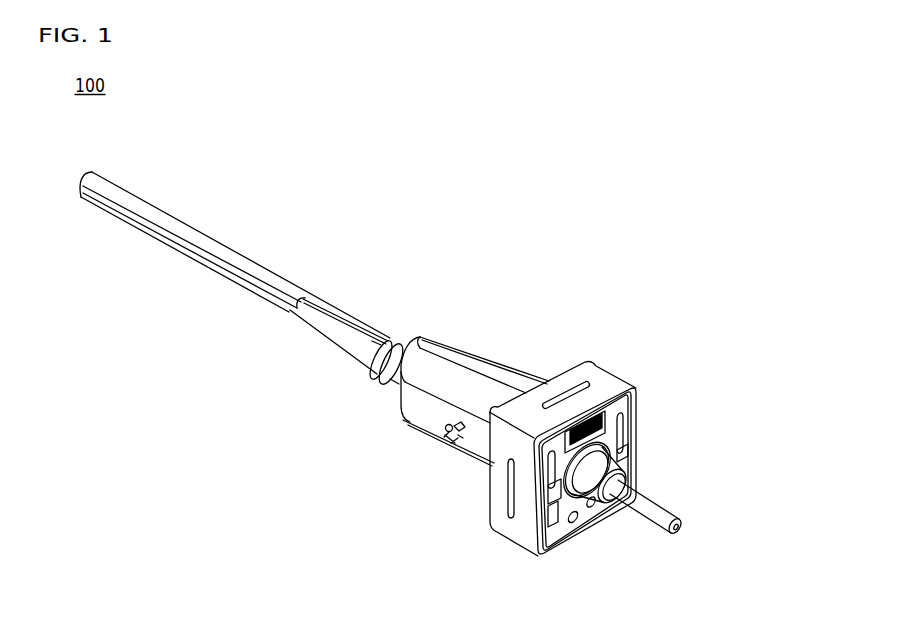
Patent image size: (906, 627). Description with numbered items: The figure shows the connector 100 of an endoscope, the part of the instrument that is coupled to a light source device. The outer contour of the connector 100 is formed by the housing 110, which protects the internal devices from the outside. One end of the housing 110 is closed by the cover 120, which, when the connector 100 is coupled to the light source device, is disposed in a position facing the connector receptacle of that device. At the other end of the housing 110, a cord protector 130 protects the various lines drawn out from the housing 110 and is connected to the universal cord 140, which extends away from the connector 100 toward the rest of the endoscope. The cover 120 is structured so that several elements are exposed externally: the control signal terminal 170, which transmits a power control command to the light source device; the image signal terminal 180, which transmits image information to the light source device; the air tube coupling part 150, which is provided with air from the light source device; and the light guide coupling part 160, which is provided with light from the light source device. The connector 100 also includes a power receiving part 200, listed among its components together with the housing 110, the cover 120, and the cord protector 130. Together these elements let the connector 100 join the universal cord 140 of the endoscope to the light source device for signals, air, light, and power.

The connector 100 is at (545, 523).
The housing 110 is at (585, 367).
The cover 120 is at (640, 393).
The cord protector 130 is at (330, 341).
The universal cord 140 is at (162, 240).
The air tube coupling part 150 is at (643, 450).
The light guide coupling part 160 is at (675, 510).
The control signal terminal 170 is at (622, 380).
The image signal terminal 180 is at (610, 378).
The power receiving part 200 is at (640, 420).